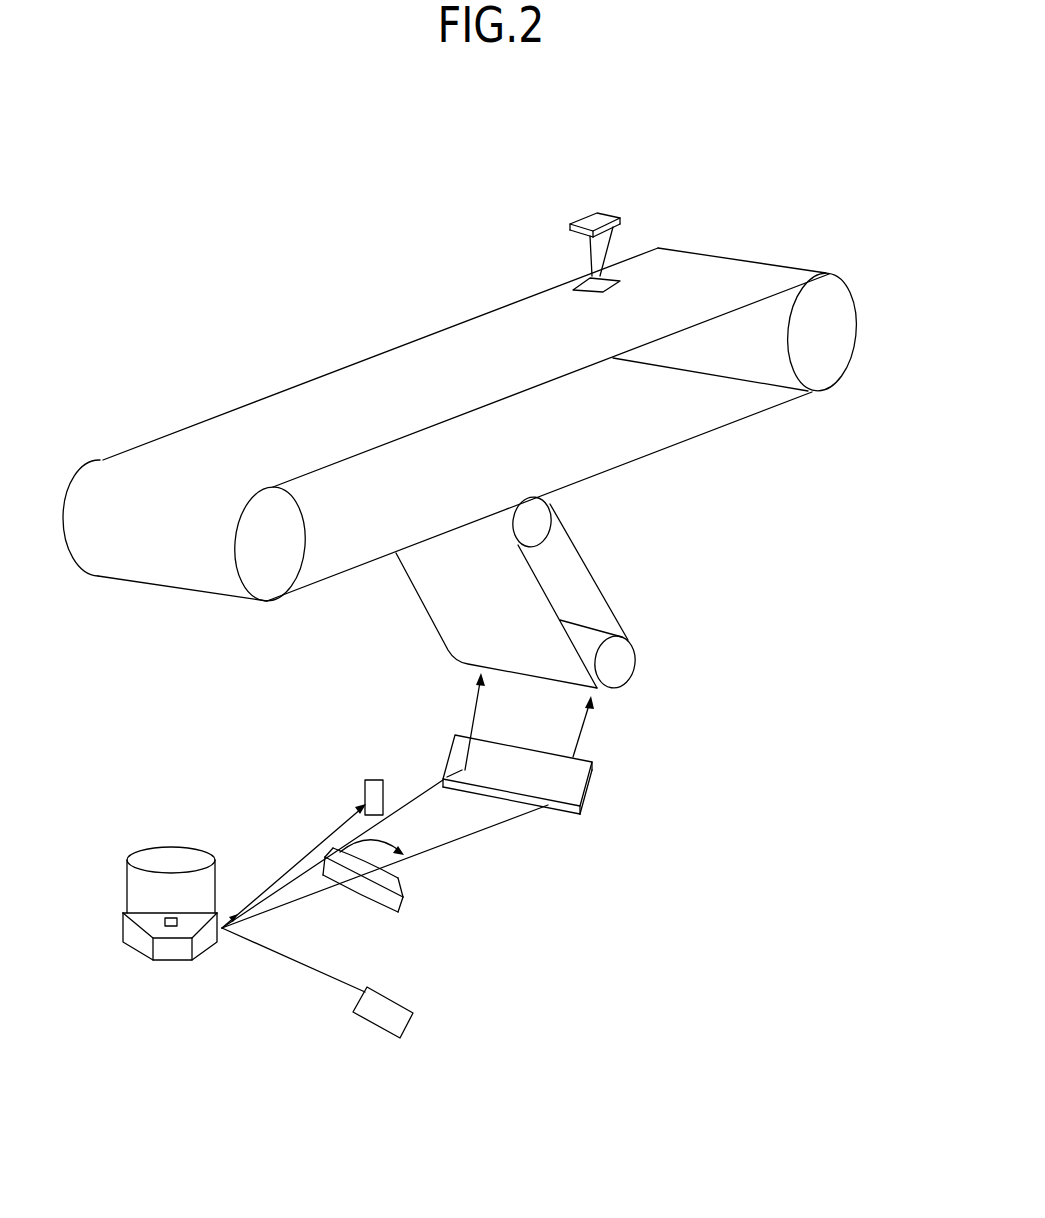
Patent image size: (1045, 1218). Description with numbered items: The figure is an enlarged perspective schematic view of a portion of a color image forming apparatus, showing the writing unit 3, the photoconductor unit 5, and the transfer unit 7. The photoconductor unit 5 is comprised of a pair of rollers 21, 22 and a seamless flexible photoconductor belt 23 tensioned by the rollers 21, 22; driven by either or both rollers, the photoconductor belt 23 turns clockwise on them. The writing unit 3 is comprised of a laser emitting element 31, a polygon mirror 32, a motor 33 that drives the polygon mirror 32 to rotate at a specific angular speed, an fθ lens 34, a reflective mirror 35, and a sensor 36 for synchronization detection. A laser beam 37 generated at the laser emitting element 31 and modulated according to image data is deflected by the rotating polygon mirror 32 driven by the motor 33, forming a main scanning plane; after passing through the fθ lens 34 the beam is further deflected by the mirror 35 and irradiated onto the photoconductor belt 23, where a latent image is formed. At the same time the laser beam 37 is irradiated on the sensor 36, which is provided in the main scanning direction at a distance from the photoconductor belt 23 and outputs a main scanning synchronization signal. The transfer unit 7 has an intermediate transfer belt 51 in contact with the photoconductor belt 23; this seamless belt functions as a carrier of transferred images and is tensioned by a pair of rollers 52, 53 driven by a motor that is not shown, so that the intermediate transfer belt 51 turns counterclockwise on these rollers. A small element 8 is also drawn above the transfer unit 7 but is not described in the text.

The writing unit 3 is at (258, 776).
The photoconductor unit 5 is at (620, 603).
The transfer unit 7 is at (443, 318).
The sensor 8 is at (593, 212).
The roller 21 is at (636, 653).
The roller 22 is at (547, 507).
The photoconductor belt 23 is at (583, 560).
The laser emitting element 31 is at (413, 1020).
The polygon mirror 32 is at (123, 933).
The motor 33 is at (143, 851).
The fθ lens 34 is at (402, 895).
The reflective mirror 35 is at (590, 782).
The sensor 36 is at (367, 780).
The laser beam 37 is at (288, 958).
The intermediate transfer belt 51 is at (340, 369).
The roller 52 is at (268, 603).
The roller 53 is at (858, 327).